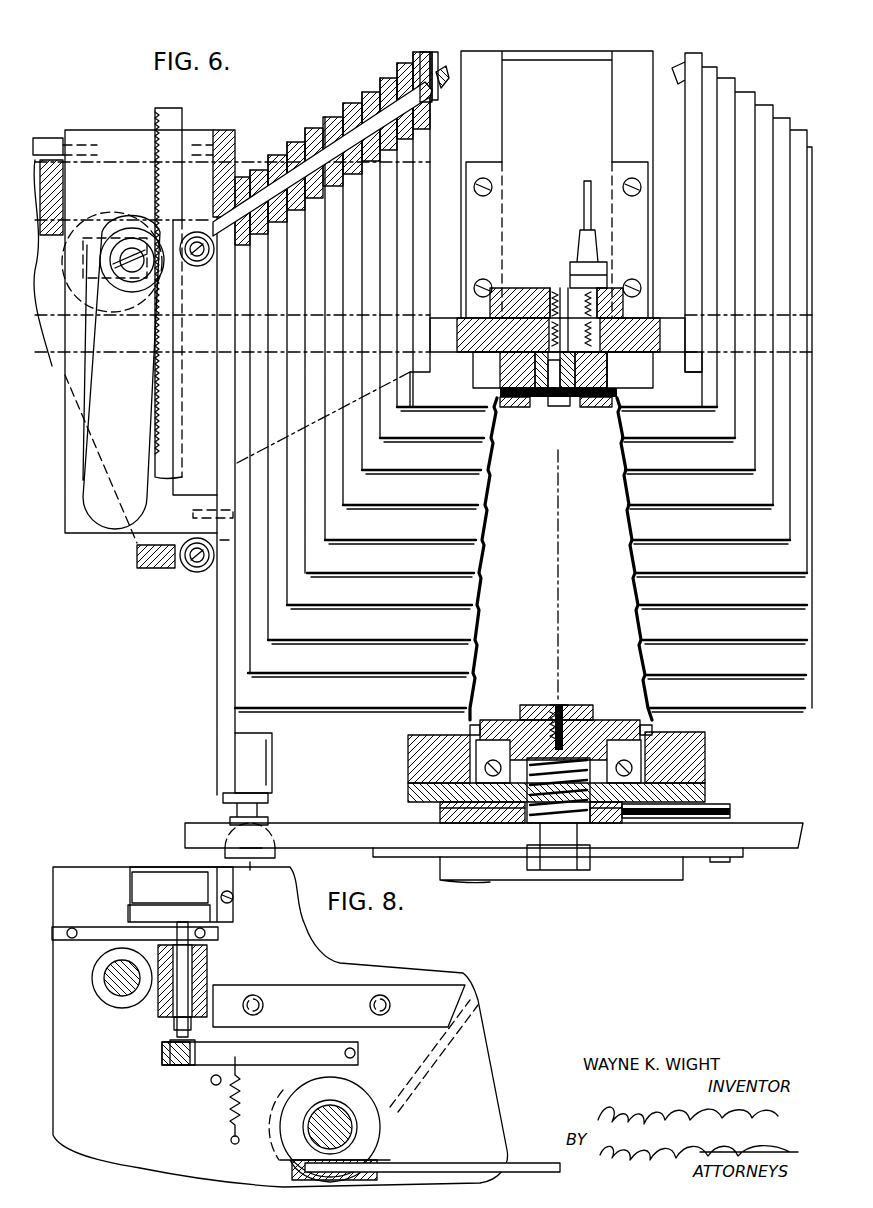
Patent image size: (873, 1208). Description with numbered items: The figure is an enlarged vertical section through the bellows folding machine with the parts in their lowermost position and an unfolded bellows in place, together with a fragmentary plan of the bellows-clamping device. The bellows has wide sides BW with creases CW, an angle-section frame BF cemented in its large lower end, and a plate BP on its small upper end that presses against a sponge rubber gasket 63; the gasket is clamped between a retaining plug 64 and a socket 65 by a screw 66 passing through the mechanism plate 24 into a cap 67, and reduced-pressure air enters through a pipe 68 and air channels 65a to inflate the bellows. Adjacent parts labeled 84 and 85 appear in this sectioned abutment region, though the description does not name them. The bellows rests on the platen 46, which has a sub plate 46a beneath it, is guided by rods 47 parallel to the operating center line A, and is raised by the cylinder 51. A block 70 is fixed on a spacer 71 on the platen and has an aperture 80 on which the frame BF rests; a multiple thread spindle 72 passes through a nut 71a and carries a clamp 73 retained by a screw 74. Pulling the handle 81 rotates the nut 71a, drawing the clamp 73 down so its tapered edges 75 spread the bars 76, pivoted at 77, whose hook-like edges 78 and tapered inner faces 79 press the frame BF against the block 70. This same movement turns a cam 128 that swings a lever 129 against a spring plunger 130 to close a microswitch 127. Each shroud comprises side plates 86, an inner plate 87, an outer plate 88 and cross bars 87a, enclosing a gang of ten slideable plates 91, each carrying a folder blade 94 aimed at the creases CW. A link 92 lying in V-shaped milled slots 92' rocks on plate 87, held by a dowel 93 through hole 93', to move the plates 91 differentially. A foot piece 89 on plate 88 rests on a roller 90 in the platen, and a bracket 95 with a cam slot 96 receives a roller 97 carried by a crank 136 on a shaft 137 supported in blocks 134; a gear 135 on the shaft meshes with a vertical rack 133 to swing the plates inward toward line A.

In FIG. 6, the mechanism plate 24 is at (460, 318).
In FIG. 6, the platen 46 is at (327, 826).
In FIG. 6, the sub plate 46a is at (740, 857).
In FIG. 8, the guide rods 47 is at (92, 975).
In FIG. 6, the cylinder 51 is at (665, 872).
In FIG. 6, the gasket 63 is at (500, 380).
In FIG. 6, the retaining plug 64 is at (530, 402).
In FIG. 6, the socket 65 is at (615, 368).
In FIG. 6, the air channels 65a is at (600, 380).
In FIG. 6, the screw 66 is at (560, 405).
In FIG. 6, the cap 67 is at (508, 288).
In FIG. 6, the pipe 68 is at (584, 210).
In FIG. 6, the block 70 is at (412, 753).
In FIG. 6, the spacer 71 is at (440, 802).
In FIG. 8, the spacer 71 is at (375, 1144).
In FIG. 6, the nut 71a is at (440, 812).
In FIG. 6, the multiple thread spindle 72 is at (575, 823).
In FIG. 8, the multiple thread spindle 72 is at (312, 1140).
In FIG. 6, the clamp 73 is at (504, 722).
In FIG. 6, the screw 74 is at (558, 705).
In FIG. 6, the tapered edges 75 is at (618, 722).
In FIG. 6, the bars 76 is at (486, 722).
In FIG. 6, the pivot 77 is at (425, 776).
In FIG. 6, the hook-like upper outer edges 78 is at (470, 724).
In FIG. 6, the tapered inner faces 79 is at (636, 722).
In FIG. 6, the recess or aperture 80 is at (670, 770).
In FIG. 6, the handle or lever 81 is at (738, 806).
In FIG. 8, the handle or lever 81 is at (447, 1163).
In FIG. 6, the plate 84 is at (557, 335).
In FIG. 6, the wall 85 is at (665, 318).
In FIG. 6, the side plates 86 is at (268, 155).
In FIG. 6, the inner plate 87 is at (424, 62).
In FIG. 6, the cross bars 87a is at (52, 160).
In FIG. 6, the outer plate 88 is at (226, 130).
In FIG. 6, the foot piece 89 is at (225, 812).
In FIG. 6, the roller 90 is at (280, 850).
In FIG. 6, the vertically slideable plates 91 is at (300, 140).
In FIG. 6, the link 92 is at (322, 154).
In FIG. 6, the milled slots 92' is at (358, 119).
In FIG. 6, the dowel 93 is at (407, 66).
In FIG. 6, the hole 93' is at (467, 64).
In FIG. 6, the folder blade 94 is at (408, 640).
In FIG. 6, the bracket 95 is at (78, 533).
In FIG. 6, the cam slot 96 is at (83, 470).
In FIG. 6, the roller 97 is at (137, 310).
In FIG. 8, the microswitch 127 is at (148, 880).
In FIG. 8, the cam 128 is at (296, 1076).
In FIG. 8, the lever 129 is at (313, 1025).
In FIG. 8, the spring plunger 130 is at (170, 1020).
In FIG. 6, the vertical rack 133 is at (163, 108).
In FIG. 6, the blocks 134 is at (72, 392).
In FIG. 6, the gear 135 is at (80, 215).
In FIG. 6, the crank 136 is at (123, 270).
In FIG. 6, the shaft 137 is at (118, 240).
In FIG. 6, the line A is at (559, 582).
In FIG. 6, the plate BP is at (612, 398).
In FIG. 6, the wide sides BW is at (483, 552).
In FIG. 6, the creases CW is at (622, 475).
In FIG. 6, the frame BF is at (656, 724).